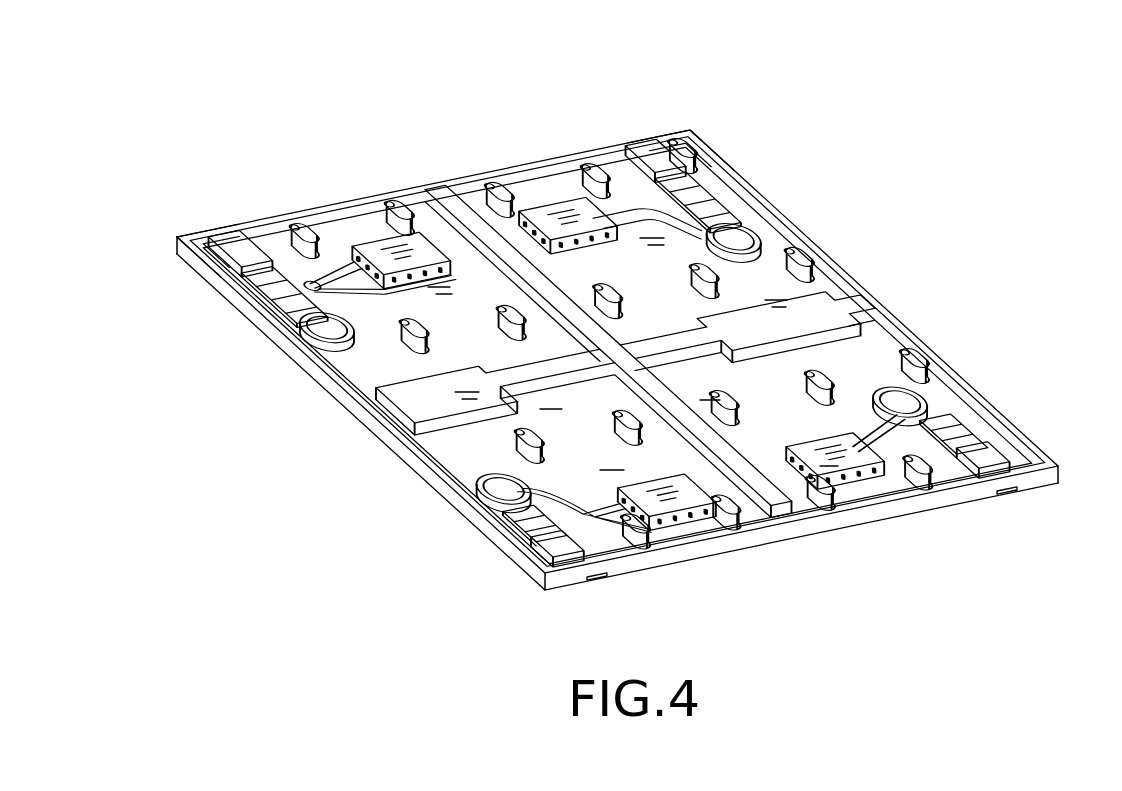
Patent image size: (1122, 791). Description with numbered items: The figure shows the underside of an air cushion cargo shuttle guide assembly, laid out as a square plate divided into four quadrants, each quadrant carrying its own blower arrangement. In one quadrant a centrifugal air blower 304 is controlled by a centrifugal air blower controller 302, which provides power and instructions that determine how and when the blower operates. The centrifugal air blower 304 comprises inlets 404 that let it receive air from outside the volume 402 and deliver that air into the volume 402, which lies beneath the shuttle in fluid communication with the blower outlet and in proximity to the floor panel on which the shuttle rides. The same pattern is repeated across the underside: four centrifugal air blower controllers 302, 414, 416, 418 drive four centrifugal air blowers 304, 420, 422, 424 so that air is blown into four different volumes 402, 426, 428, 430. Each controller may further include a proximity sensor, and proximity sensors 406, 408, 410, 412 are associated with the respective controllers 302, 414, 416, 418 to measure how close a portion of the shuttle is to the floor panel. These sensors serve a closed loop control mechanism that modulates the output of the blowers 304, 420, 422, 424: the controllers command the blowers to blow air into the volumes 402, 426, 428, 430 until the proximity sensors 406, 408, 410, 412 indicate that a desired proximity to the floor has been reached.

The centrifugal air blower controller 302 is at (430, 247).
The centrifugal air blower 304 is at (320, 308).
The volume 402 is at (587, 480).
The inlets 404 is at (590, 580).
The proximity sensor 406 is at (547, 577).
The proximity sensor 408 is at (997, 472).
The proximity sensor 410 is at (686, 142).
The proximity sensor 412 is at (200, 241).
The centrifugal air blower controller 414 is at (558, 212).
The centrifugal air blower controller 416 is at (887, 412).
The centrifugal air blower controller 418 is at (655, 500).
The centrifugal air blower 420 is at (790, 227).
The centrifugal air blower 422 is at (826, 456).
The centrifugal air blower 424 is at (470, 490).
The volume 426 is at (800, 396).
The volume 428 is at (740, 228).
The volume 430 is at (362, 352).